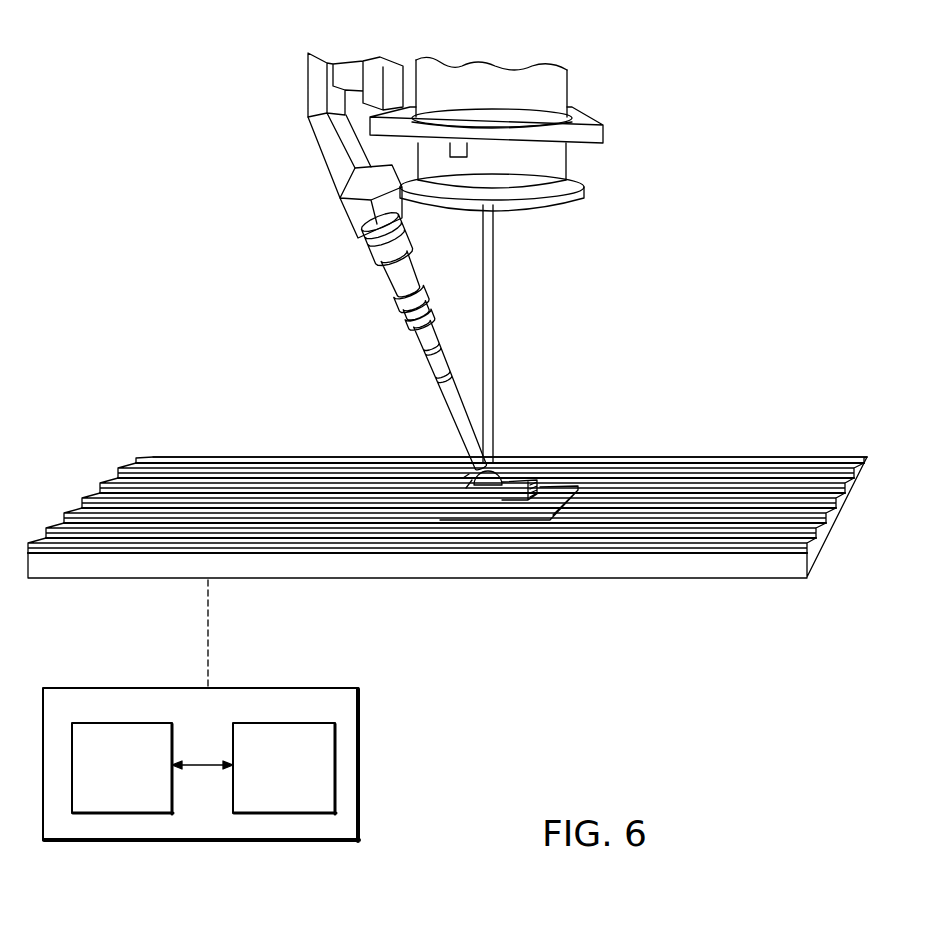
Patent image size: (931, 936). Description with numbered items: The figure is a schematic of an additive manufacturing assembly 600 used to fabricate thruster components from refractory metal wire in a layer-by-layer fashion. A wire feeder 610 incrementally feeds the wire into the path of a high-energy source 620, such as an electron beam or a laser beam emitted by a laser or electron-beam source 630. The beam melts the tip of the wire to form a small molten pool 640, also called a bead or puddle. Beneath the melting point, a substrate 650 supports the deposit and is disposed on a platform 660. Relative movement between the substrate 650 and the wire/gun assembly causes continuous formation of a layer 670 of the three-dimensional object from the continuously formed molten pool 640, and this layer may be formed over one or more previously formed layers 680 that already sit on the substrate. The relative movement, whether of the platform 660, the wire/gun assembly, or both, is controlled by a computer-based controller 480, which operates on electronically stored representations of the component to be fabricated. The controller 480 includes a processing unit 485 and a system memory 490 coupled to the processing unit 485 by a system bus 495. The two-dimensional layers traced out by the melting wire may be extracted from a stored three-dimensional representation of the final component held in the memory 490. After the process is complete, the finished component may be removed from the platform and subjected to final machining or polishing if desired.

The additive manufacturing assembly 600 is at (218, 174).
The wire feeder 610 is at (379, 279).
The high-energy source 620 is at (496, 283).
The laser or electron-beam source 630 is at (512, 82).
The molten pool 640 is at (461, 469).
The substrate 650 is at (561, 494).
The platform 660 is at (769, 457).
The layer 670 is at (283, 478).
The previously formed layers 680 is at (523, 481).
The computer-based controller 480 is at (232, 764).
The processing unit 485 is at (305, 784).
The system memory 490 is at (143, 779).
The system bus 495 is at (200, 759).